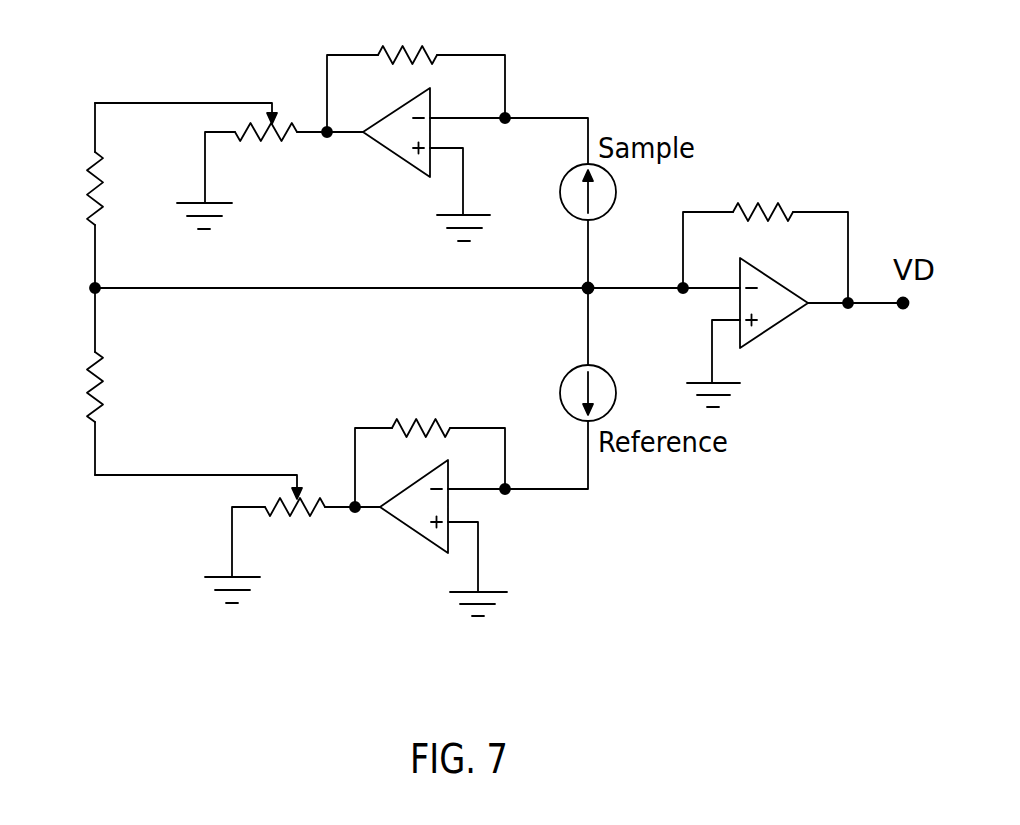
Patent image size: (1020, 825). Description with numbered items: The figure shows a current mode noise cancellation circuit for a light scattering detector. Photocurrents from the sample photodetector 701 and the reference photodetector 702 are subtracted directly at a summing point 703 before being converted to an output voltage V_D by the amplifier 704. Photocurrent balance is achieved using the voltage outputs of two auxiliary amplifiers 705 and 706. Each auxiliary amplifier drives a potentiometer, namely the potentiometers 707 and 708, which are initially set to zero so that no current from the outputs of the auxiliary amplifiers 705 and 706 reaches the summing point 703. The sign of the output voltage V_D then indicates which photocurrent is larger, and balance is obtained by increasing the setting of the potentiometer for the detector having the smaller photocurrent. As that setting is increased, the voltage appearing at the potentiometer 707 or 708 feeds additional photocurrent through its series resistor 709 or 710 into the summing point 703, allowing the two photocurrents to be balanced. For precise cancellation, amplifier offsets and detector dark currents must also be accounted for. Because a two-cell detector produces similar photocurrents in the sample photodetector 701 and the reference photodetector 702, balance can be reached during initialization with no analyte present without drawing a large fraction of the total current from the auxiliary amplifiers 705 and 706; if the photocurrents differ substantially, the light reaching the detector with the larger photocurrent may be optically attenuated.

The sample photodetector 701 is at (584, 203).
The reference photodetector 702 is at (584, 388).
The summing point 703 is at (562, 272).
The amplifier 704 is at (793, 305).
The auxiliary amplifier 705 is at (416, 143).
The auxiliary amplifier 706 is at (430, 517).
The potentiometer 707 is at (252, 176).
The potentiometer 708 is at (280, 550).
The series resistor 709 is at (62, 188).
The series resistor 710 is at (64, 387).